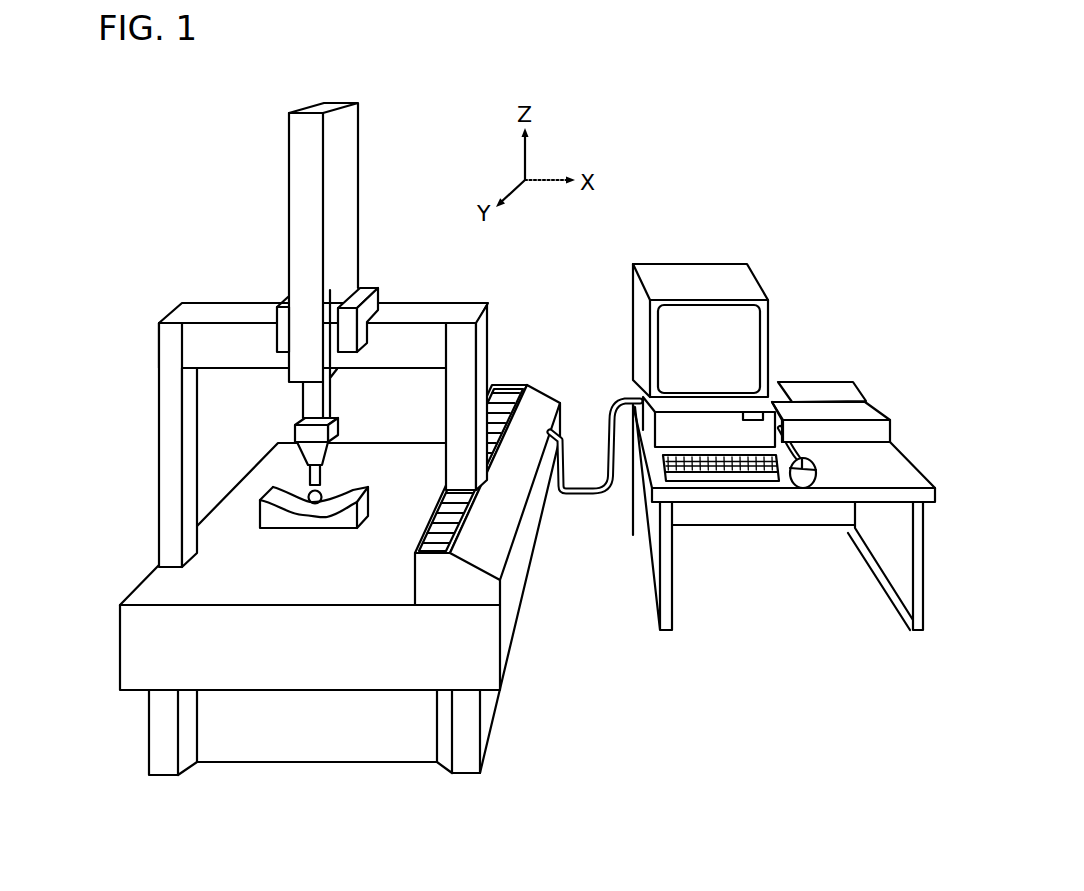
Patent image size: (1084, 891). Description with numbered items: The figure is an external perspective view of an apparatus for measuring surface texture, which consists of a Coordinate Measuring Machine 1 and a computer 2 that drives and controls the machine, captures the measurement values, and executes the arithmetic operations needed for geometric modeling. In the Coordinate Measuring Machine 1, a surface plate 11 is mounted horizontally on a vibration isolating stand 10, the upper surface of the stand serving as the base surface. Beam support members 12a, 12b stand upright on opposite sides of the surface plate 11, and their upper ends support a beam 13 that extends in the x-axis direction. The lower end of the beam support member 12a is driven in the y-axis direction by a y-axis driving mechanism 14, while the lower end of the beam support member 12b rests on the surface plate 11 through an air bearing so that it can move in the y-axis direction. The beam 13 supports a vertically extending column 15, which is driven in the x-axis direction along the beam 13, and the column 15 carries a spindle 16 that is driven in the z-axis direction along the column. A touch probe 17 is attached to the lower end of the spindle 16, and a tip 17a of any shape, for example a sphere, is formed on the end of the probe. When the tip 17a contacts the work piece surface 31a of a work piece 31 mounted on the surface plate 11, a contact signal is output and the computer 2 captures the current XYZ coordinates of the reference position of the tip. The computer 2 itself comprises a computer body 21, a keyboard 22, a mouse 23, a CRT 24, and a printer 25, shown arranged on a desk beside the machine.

The Coordinate Measuring Machine 1 is at (397, 170).
The computer 2 is at (832, 290).
The vibration isolating stand 10 is at (157, 741).
The surface plate 11 is at (127, 648).
The beam support member 12a is at (484, 336).
The beam support member 12b is at (167, 434).
The beam 13 is at (217, 318).
The y-axis driving mechanism 14 is at (537, 402).
The column 15 is at (296, 184).
The spindle 16 is at (306, 395).
The touch probe 17 is at (309, 491).
The tip 17a is at (322, 498).
The computer body 21 is at (633, 392).
The keyboard 22 is at (737, 473).
The mouse 23 is at (818, 489).
The CRT 24 is at (702, 270).
The printer 25 is at (868, 400).
The work piece 31 is at (266, 517).
The work piece surface 31a is at (348, 511).